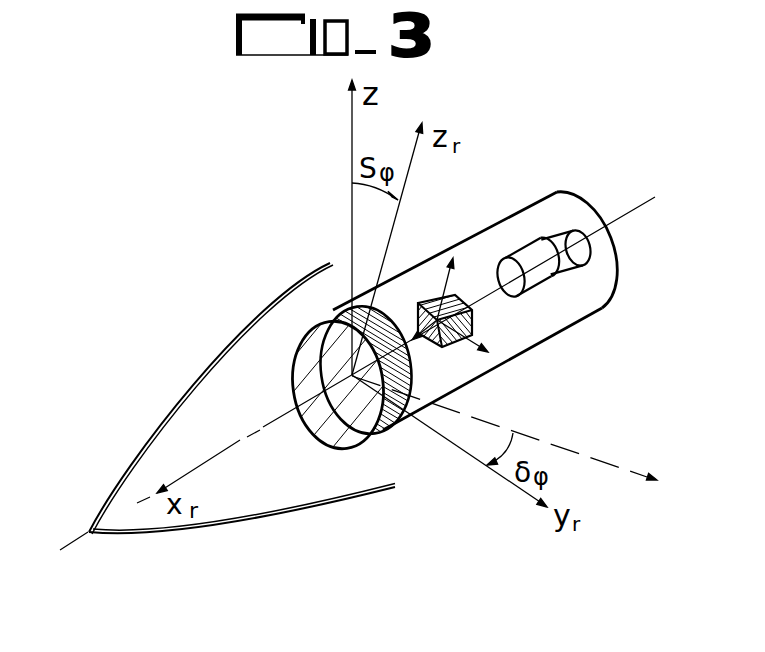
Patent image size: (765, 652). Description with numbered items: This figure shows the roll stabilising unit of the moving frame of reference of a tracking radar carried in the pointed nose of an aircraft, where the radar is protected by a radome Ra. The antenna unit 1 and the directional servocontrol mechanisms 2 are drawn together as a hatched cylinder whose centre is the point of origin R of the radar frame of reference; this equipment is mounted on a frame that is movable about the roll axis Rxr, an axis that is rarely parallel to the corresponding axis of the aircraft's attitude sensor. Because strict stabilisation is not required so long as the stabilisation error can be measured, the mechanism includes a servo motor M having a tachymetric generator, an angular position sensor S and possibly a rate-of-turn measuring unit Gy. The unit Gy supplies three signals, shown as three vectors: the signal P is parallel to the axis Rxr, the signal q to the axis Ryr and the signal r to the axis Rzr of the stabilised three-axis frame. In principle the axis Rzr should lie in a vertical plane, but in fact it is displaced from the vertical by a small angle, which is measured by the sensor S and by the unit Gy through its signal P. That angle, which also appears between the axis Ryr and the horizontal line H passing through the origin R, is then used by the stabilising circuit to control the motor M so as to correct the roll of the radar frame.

The radome Ra is at (207, 367).
The antenna unit 1 is at (475, 341).
The directional servocontrol mechanisms 2 is at (385, 428).
The point of origin of the radar frame of reference R is at (370, 381).
The rate-of-turn measuring unit Gy is at (472, 320).
The rate-of-turn signal r is at (455, 283).
The rate-of-turn signal q is at (462, 349).
The rate-of-turn signal p P is at (423, 346).
The angular position sensor S is at (535, 284).
The servo motor M is at (576, 256).
The horizontal line H is at (504, 428).